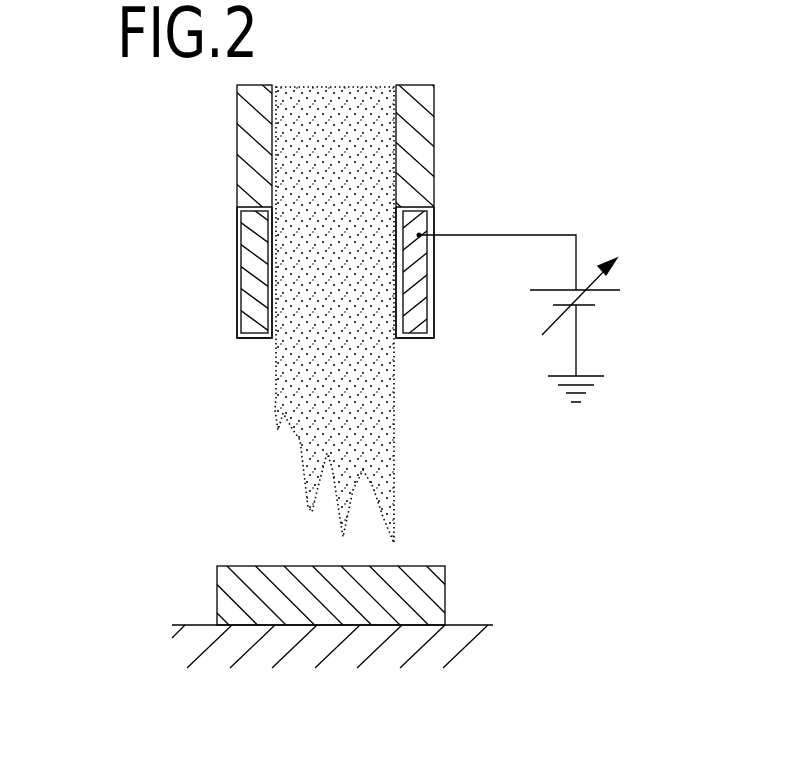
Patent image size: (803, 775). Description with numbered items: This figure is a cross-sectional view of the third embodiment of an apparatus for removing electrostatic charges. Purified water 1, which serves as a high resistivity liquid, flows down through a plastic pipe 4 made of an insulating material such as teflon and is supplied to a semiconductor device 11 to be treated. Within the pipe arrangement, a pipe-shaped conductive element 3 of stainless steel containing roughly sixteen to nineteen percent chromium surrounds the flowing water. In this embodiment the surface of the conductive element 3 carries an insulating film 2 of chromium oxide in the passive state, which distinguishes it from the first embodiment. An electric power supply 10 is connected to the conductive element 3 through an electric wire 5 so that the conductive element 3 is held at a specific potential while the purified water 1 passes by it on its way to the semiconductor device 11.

The purified water 1 is at (399, 478).
The insulating film 2 is at (436, 340).
The conductive element 3 is at (421, 275).
The plastic pipe 4 is at (420, 120).
The electric wire 5 is at (543, 235).
The electric power supply 10 is at (617, 307).
The semiconductor device 11 is at (430, 610).